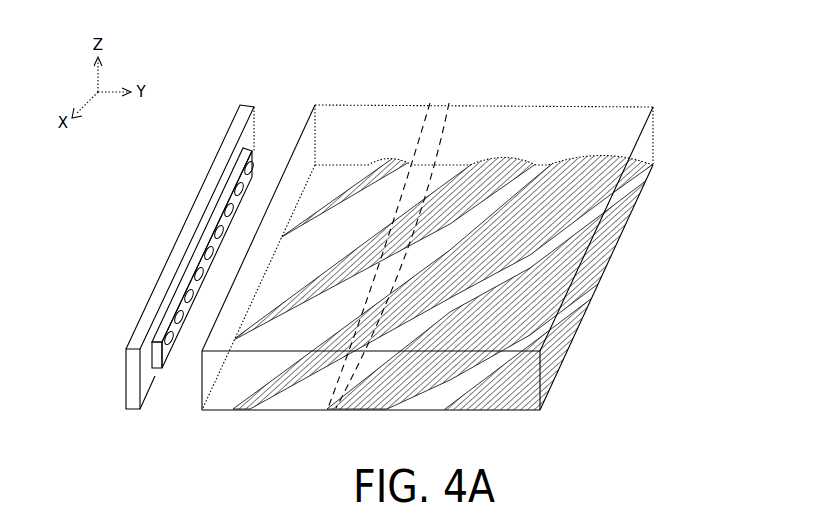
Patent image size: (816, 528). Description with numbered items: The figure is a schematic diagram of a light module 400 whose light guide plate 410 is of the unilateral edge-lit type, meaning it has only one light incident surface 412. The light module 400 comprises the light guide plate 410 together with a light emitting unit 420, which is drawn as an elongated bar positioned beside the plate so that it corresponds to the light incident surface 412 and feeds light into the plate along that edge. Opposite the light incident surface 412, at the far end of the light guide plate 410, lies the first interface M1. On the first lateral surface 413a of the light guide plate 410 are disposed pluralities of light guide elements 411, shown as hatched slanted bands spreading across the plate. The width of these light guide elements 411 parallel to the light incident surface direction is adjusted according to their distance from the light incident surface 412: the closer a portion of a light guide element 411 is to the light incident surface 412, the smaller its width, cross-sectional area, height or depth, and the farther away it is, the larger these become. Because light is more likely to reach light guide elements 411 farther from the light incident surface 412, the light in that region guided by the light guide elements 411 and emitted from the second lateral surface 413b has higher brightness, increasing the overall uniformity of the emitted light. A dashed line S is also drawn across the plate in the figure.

The light module 400 is at (158, 211).
The light emitting unit 420 is at (134, 400).
The light guide plate 410 is at (430, 402).
The light guide elements 411 is at (368, 402).
The light incident surface 412 is at (198, 382).
The first lateral surface 413a is at (490, 406).
The second lateral surface 413b is at (549, 120).
The first interface M1 is at (650, 138).
The light beam path S is at (447, 110).